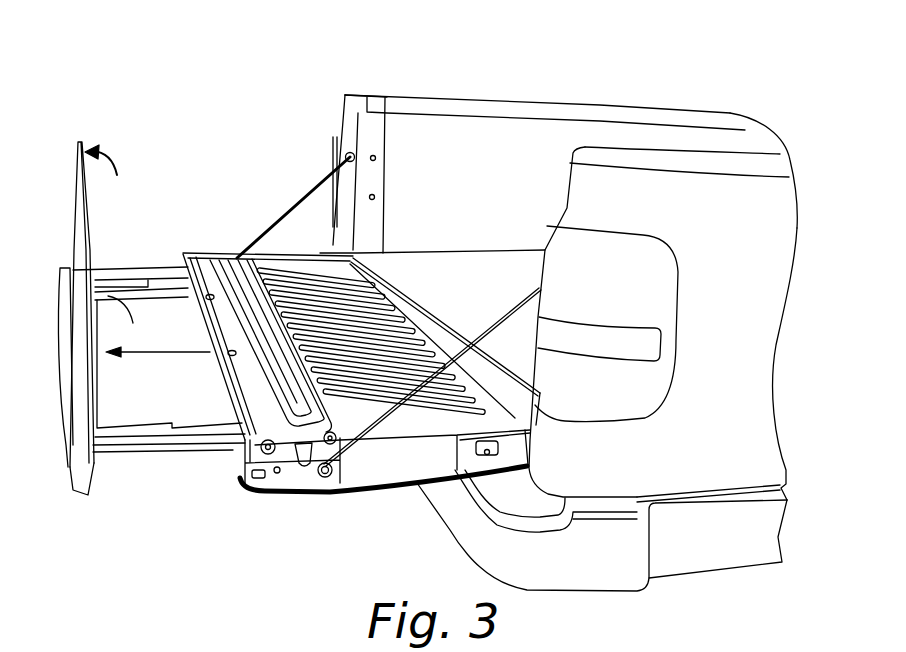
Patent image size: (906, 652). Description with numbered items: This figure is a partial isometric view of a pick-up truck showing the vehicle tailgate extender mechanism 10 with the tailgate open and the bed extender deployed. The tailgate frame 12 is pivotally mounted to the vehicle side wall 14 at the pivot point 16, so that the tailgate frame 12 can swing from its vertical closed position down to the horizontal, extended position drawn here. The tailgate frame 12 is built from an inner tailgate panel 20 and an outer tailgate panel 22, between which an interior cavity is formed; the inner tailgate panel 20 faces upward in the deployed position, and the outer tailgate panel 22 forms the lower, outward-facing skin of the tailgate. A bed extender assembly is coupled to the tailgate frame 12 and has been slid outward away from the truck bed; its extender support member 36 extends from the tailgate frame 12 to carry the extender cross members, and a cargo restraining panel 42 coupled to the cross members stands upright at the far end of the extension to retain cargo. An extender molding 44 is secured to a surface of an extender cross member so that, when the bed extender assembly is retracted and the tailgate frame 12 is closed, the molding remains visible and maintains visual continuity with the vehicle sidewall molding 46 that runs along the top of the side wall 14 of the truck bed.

The vehicle tailgate extender mechanism 10 is at (166, 181).
The tailgate frame 12 is at (295, 275).
The vehicle side wall 14 is at (487, 130).
The pivot point 16 is at (497, 505).
The inner tailgate panel 20 is at (310, 353).
The outer tailgate panel 22 is at (383, 502).
The extender support member 36 is at (142, 443).
The cargo restraining panel 42 is at (80, 212).
The extender molding 44 is at (70, 467).
The vehicle sidewall molding 46 is at (604, 104).